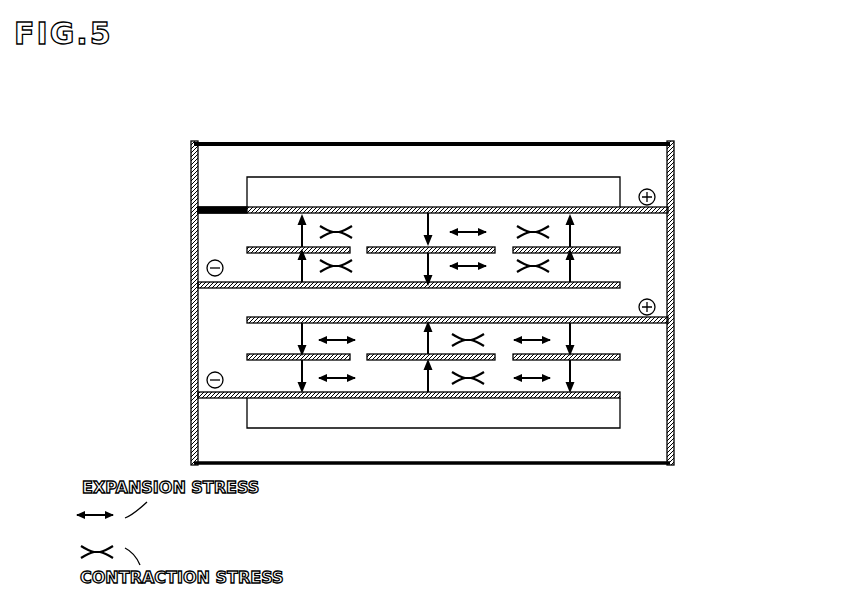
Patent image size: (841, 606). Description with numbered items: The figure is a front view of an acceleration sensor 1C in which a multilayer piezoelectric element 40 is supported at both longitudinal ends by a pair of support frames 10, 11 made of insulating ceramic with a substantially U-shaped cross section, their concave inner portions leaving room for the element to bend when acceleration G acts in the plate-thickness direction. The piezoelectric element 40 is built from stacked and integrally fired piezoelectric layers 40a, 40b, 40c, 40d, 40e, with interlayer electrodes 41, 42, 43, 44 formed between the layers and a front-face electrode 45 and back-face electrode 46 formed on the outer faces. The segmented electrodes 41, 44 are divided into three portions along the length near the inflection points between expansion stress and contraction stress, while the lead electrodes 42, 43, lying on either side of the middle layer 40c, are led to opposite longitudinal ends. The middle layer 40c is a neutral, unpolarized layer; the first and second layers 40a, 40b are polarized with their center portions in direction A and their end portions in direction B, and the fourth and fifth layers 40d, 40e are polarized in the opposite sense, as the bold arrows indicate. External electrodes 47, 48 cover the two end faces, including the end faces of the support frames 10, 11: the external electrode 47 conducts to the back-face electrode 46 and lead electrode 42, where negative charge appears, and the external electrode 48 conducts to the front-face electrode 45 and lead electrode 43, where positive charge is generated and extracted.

The acceleration sensor 1C is at (671, 128).
The support frame 10 is at (336, 152).
The support frame 11 is at (356, 455).
The piezoelectric element 40 is at (752, 212).
The piezoelectric layer 40a is at (623, 233).
The piezoelectric layer 40b is at (615, 267).
The piezoelectric layer 40c is at (613, 302).
The piezoelectric layer 40d is at (615, 340).
The piezoelectric layer 40e is at (612, 373).
The segmented electrode 41 is at (247, 248).
The lead electrode 42 is at (250, 282).
The lead electrode 43 is at (247, 320).
The segmented electrode 44 is at (247, 355).
The front-face electrode 45 is at (480, 207).
The back-face electrode 46 is at (463, 398).
The external electrode 47 is at (191, 178).
The external electrode 48 is at (678, 183).